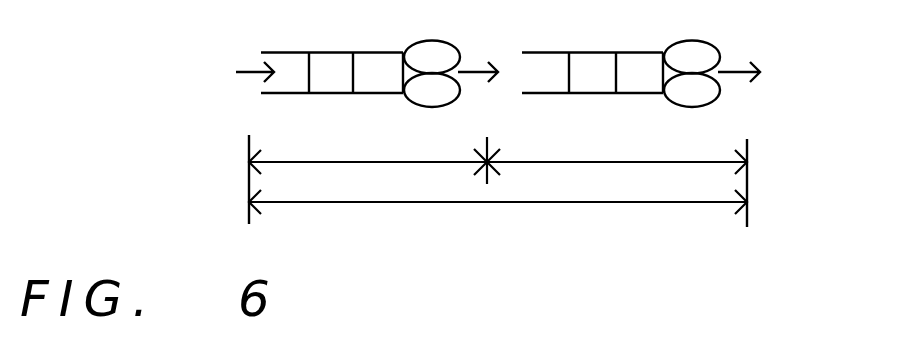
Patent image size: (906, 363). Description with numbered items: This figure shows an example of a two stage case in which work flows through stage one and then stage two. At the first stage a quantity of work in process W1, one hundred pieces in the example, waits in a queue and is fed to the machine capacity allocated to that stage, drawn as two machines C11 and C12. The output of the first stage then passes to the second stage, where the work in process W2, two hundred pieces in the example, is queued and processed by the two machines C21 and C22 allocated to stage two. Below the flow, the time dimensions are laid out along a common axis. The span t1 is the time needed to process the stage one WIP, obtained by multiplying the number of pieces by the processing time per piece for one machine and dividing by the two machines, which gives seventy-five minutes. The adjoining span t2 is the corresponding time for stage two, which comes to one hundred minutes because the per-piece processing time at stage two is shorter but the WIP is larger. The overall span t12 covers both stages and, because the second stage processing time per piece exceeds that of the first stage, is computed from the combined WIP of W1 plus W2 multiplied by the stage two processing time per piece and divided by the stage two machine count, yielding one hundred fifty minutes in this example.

The WIP at stage one W1 is at (319, 49).
The WIP at stage two W2 is at (592, 49).
The first machine allocated to stage one C11 is at (432, 57).
The second machine allocated to stage one C12 is at (432, 90).
The first machine allocated to stage two C21 is at (692, 57).
The second machine allocated to stage two C22 is at (692, 90).
The stage one processing time t1 is at (368, 157).
The stage two processing time t2 is at (617, 152).
The combined two-stage processing time t12 is at (498, 215).